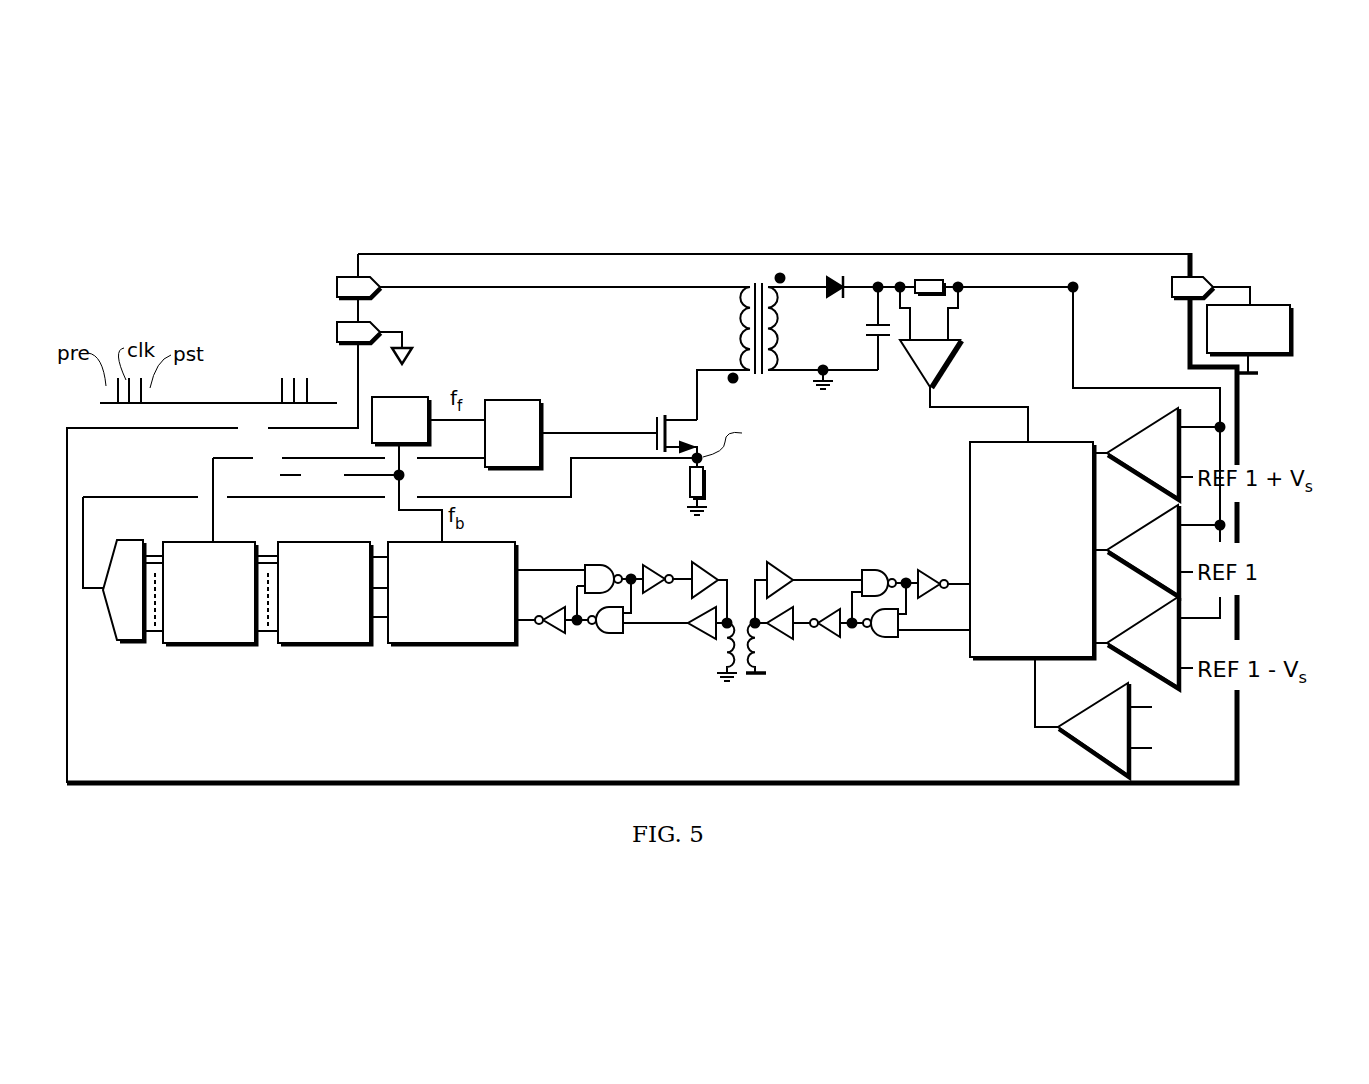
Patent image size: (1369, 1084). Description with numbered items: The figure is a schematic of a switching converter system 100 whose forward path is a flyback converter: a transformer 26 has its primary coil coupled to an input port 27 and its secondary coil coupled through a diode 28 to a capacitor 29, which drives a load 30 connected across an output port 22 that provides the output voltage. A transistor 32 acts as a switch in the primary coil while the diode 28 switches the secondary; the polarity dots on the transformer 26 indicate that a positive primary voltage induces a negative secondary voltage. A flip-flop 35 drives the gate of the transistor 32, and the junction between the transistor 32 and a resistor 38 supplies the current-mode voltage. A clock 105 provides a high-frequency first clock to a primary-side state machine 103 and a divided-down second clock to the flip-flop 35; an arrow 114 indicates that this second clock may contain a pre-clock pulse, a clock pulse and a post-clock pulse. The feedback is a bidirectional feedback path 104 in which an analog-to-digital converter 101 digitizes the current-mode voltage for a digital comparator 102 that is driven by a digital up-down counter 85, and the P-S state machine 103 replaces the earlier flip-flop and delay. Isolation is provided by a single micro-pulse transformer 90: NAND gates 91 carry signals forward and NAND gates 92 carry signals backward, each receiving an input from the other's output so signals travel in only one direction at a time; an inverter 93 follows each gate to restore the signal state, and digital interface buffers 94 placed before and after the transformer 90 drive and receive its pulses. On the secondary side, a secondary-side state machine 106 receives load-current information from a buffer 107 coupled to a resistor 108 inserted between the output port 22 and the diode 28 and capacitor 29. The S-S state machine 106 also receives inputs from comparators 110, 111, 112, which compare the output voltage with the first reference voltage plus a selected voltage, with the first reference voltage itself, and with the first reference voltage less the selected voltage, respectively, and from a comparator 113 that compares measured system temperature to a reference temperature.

The switching converter system 100 is at (568, 250).
The input port 27 is at (340, 276).
The output port 22 is at (1198, 272).
The load 30 is at (1273, 301).
The diode 28 is at (825, 277).
The resistor 108 is at (975, 275).
The capacitor 29 is at (829, 338).
The buffer 107 is at (948, 364).
The transformer 26 is at (741, 347).
The transistor 32 is at (663, 425).
The flip-flop 35 is at (530, 434).
The resistor 38 is at (714, 486).
The clock 105 is at (421, 394).
The arrow 114 is at (240, 406).
The comparator 110 is at (1136, 454).
The comparator 111 is at (1136, 551).
The comparator 112 is at (1136, 643).
The comparator 113 is at (1116, 717).
The secondary-side state machine 106 is at (1008, 662).
The analog-to-digital converter 101 is at (108, 622).
The digital comparator 102 is at (213, 648).
The digital up-down counter 85 is at (342, 648).
The primary-side state machine 103 is at (443, 648).
The bidirectional feedback path 104 is at (338, 707).
The NAND gates 91 is at (593, 561).
The NAND gates 92 is at (612, 636).
The inverter 93 is at (657, 565).
The digital interface buffers 94 is at (753, 603).
The micro-pulse transformer 90 is at (720, 660).